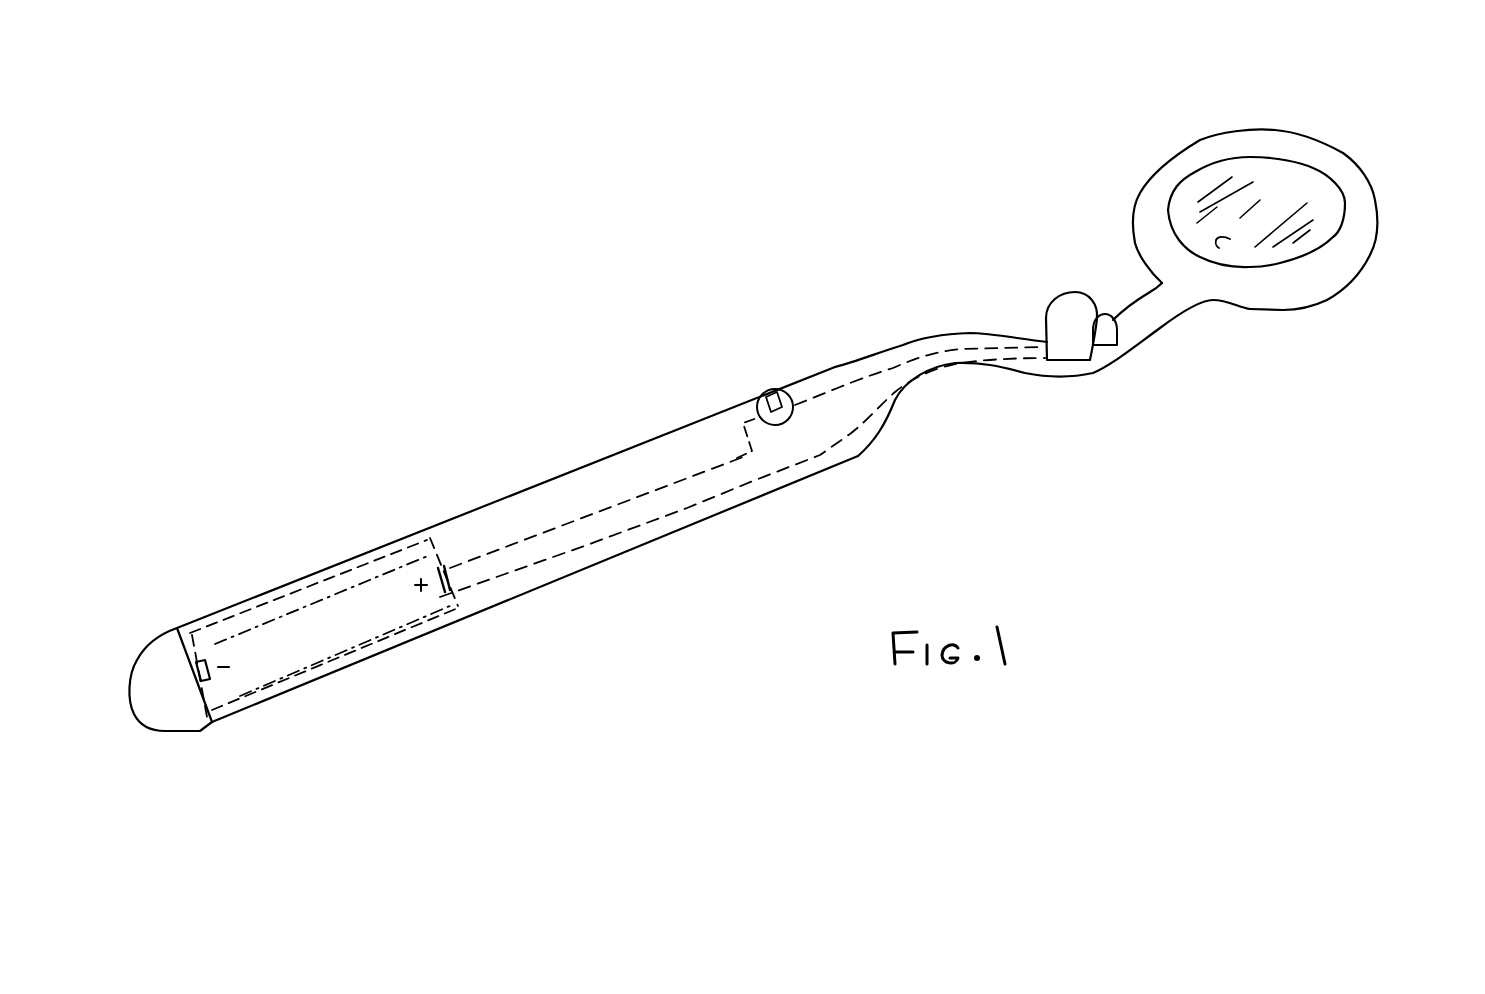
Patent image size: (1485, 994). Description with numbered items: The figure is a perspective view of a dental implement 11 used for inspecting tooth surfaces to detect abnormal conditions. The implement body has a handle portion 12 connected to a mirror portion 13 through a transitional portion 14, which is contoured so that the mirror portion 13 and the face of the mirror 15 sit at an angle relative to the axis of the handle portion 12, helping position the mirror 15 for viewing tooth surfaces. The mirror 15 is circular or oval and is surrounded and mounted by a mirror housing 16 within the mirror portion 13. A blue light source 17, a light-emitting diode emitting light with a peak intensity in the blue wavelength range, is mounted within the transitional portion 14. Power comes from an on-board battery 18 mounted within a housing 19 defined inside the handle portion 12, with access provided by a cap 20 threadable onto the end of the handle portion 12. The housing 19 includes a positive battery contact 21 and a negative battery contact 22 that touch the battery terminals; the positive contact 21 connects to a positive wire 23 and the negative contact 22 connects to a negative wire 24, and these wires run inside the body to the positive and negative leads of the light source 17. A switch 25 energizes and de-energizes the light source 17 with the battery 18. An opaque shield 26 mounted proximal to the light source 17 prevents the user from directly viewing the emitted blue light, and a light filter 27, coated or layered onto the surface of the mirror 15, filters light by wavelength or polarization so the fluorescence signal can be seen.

The dental implement 11 is at (687, 60).
The handle portion 12 is at (473, 512).
The mirror portion 13 is at (1364, 170).
The transitional portion 14 is at (937, 320).
The mirror 15 is at (1300, 175).
The mirror housing 16 is at (1338, 263).
The blue light source 17 is at (1109, 315).
The battery 18 is at (277, 618).
The housing 19 is at (412, 548).
The cap 20 is at (190, 733).
The positive battery contact 21 is at (440, 578).
The negative battery contact 22 is at (190, 670).
The positive wire 23 is at (661, 490).
The negative wire 24 is at (680, 525).
The switch 25 is at (782, 389).
The shield 26 is at (1058, 295).
The light filter 27 is at (1230, 239).